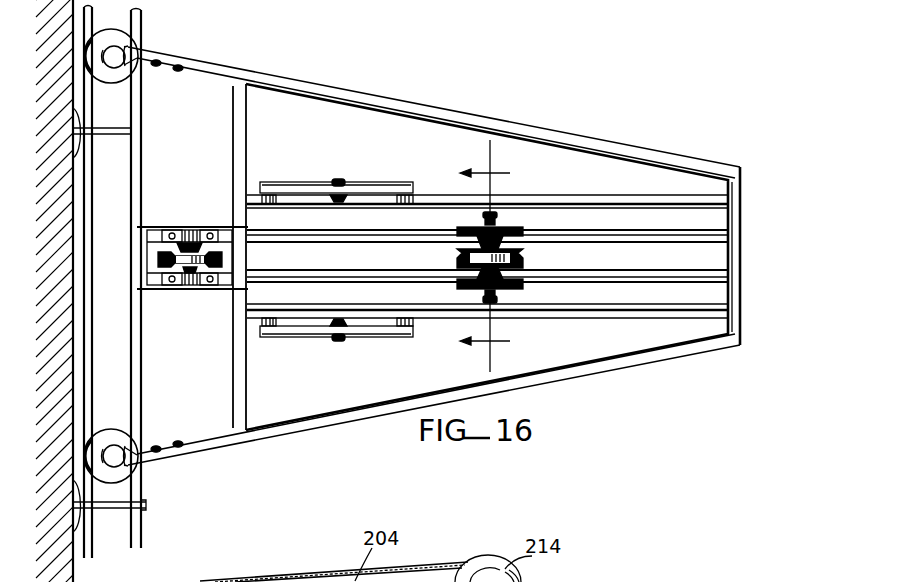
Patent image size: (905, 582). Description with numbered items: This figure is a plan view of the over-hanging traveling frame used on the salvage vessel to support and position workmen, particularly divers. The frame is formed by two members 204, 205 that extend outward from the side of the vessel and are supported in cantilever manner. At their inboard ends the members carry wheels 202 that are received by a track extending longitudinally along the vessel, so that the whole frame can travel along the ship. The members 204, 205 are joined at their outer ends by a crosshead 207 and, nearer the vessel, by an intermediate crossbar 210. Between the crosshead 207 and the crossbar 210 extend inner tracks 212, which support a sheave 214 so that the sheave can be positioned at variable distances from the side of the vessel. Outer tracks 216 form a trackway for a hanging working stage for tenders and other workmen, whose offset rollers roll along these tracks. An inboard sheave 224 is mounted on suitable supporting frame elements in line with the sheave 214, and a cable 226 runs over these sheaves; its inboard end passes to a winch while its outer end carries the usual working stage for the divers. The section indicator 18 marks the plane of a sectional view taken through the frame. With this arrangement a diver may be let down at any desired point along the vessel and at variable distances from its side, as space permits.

The wheels 202 is at (133, 41).
The overhanging frame member 204 is at (569, 374).
The overhanging frame member 205 is at (557, 132).
The crosshead 207 is at (740, 251).
The intermediate crossbar 210 is at (247, 156).
The inner tracks 212 is at (629, 236).
The sheave 214 is at (525, 256).
The outer tracks 216 is at (558, 198).
The inboard sheave 224 is at (221, 257).
The cable 226 is at (250, 581).
The section line 18 is at (491, 256).